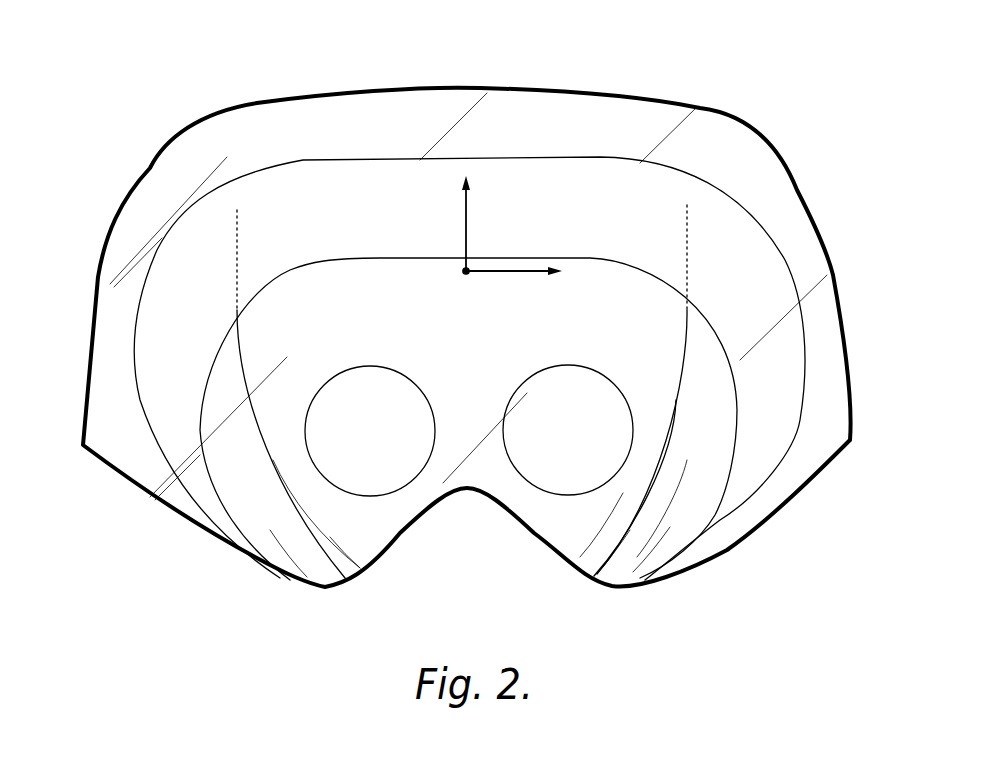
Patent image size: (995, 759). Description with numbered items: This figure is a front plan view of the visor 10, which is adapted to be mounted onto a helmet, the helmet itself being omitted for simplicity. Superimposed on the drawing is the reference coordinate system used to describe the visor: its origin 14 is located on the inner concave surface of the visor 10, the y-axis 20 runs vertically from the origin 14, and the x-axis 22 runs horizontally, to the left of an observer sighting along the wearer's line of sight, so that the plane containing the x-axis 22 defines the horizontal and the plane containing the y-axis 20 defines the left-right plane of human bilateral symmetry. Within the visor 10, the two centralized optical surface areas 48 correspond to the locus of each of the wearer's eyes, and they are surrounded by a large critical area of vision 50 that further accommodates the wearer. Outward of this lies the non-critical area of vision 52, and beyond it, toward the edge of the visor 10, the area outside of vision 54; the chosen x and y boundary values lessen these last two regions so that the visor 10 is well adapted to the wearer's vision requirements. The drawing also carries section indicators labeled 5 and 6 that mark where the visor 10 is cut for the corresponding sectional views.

The visor 10 is at (684, 100).
The origin 14 is at (464, 275).
The y-axis 20 is at (467, 207).
The x-axis 22 is at (500, 273).
The centralized optical surface areas 48 is at (353, 442).
The critical area of vision 50 is at (624, 359).
The non-critical area of vision 52 is at (716, 296).
The area outside of vision 54 is at (737, 187).
The section line 5- 5 is at (92, 274).
The section line 6- 6 is at (467, 2).